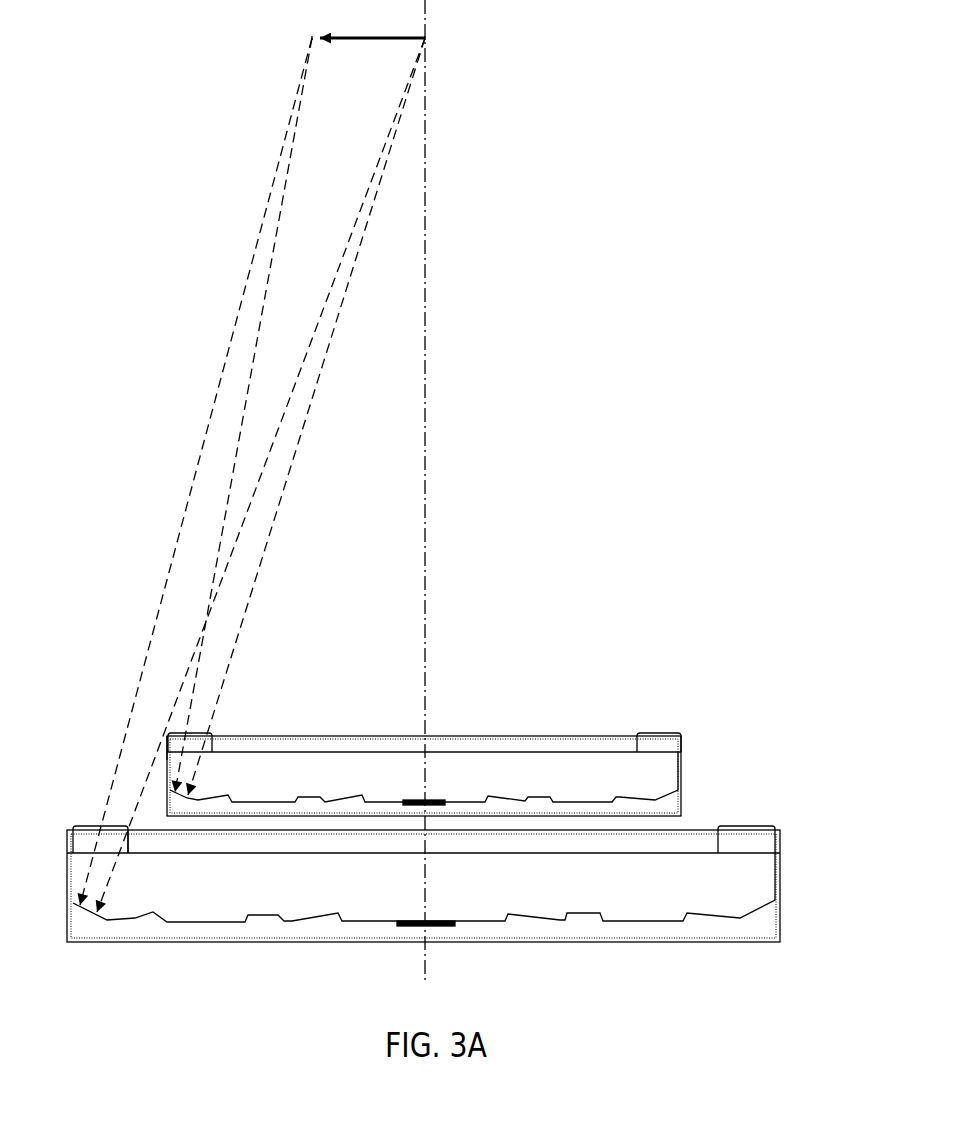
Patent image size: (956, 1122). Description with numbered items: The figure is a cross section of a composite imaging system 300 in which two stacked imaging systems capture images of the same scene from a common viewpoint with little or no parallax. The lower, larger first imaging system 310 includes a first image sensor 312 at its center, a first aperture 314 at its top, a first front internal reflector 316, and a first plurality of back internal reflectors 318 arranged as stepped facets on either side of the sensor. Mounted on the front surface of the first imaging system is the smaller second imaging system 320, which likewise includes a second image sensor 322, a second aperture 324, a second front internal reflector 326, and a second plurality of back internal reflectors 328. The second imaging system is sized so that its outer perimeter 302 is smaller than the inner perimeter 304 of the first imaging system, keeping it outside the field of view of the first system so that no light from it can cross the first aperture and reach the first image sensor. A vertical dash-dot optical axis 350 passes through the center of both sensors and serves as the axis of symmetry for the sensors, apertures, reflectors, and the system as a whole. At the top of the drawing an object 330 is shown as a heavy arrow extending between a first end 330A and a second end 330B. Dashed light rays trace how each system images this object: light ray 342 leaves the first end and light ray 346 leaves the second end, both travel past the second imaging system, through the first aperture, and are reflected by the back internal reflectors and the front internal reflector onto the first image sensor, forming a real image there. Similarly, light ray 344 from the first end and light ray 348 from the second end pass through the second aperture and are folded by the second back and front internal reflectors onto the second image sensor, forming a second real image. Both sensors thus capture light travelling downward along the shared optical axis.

The composite imaging system 300 is at (621, 316).
The outer perimeter 302 is at (168, 733).
The inner perimeter 304 is at (128, 832).
The first imaging system 310 is at (771, 806).
The first image sensor 312 is at (405, 920).
The first aperture 314 is at (103, 826).
The first front internal reflector 316 is at (222, 854).
The first plurality of back internal reflectors 318 is at (306, 909).
The second imaging system 320 is at (674, 714).
The second image sensor 322 is at (410, 800).
The second aperture 324 is at (186, 733).
The second front internal reflector 326 is at (346, 766).
The second plurality of back internal reflectors 328 is at (345, 792).
The object 330 is at (383, 37).
The first end 330A is at (312, 37).
The second end 330B is at (426, 37).
The light ray 342 is at (230, 338).
The light ray 344 is at (263, 299).
The light ray 346 is at (360, 213).
The light ray 348 is at (343, 292).
The optical axis 350 is at (427, 151).